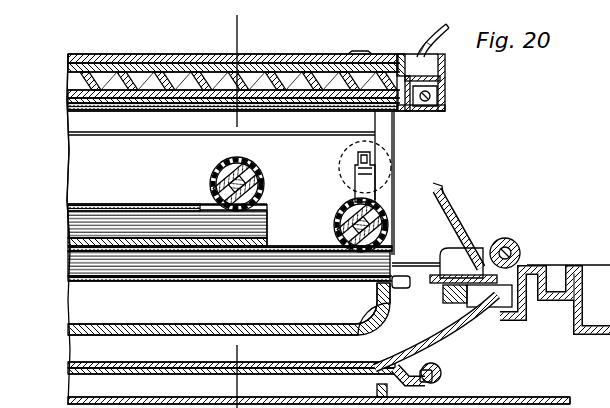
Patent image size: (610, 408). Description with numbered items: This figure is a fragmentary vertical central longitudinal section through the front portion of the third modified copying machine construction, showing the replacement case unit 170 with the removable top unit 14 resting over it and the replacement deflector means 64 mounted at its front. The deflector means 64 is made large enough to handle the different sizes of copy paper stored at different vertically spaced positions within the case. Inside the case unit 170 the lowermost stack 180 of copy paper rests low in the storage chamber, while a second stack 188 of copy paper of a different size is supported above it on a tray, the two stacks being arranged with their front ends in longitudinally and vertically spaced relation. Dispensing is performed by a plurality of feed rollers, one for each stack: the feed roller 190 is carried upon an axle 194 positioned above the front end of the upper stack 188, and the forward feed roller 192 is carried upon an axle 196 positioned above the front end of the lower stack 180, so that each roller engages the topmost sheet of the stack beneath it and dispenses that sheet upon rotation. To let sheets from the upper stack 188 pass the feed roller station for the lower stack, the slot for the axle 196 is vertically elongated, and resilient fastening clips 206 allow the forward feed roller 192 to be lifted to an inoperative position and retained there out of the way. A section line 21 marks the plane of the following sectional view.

The removable top unit 14 is at (118, 50).
The section line 21 is at (213, 19).
The replacement case unit 170 is at (56, 160).
The second stack of copy paper 188 is at (115, 232).
The feed roller 190 is at (244, 167).
The axle 194 is at (259, 196).
The axle 196 is at (337, 229).
The forward feed roller 192 is at (389, 234).
The resilient fastening clip 206 is at (381, 158).
The lowermost stack of copy paper 180 is at (170, 258).
The deflector means 64 is at (448, 232).